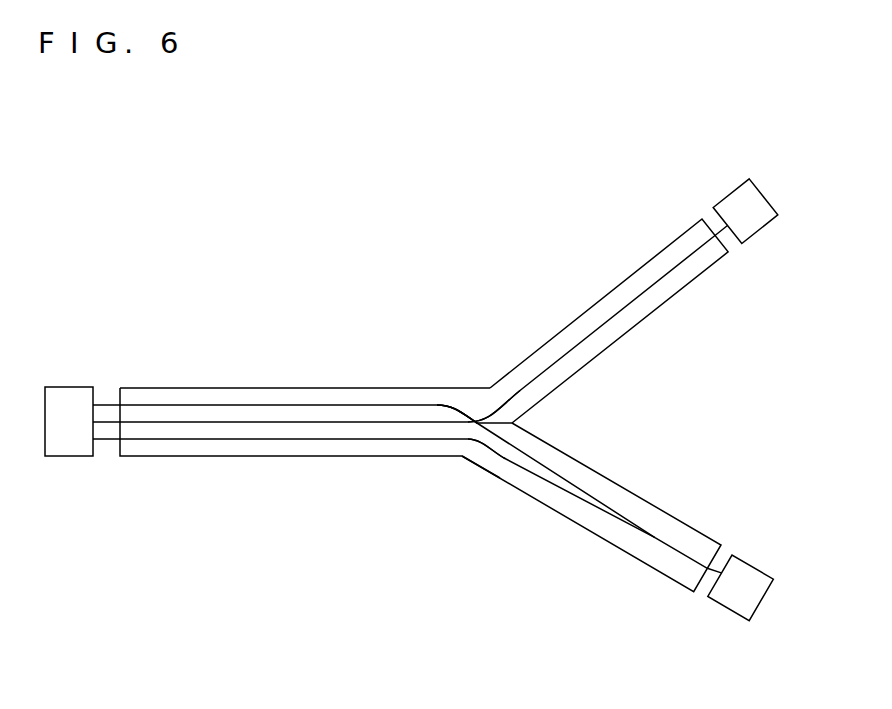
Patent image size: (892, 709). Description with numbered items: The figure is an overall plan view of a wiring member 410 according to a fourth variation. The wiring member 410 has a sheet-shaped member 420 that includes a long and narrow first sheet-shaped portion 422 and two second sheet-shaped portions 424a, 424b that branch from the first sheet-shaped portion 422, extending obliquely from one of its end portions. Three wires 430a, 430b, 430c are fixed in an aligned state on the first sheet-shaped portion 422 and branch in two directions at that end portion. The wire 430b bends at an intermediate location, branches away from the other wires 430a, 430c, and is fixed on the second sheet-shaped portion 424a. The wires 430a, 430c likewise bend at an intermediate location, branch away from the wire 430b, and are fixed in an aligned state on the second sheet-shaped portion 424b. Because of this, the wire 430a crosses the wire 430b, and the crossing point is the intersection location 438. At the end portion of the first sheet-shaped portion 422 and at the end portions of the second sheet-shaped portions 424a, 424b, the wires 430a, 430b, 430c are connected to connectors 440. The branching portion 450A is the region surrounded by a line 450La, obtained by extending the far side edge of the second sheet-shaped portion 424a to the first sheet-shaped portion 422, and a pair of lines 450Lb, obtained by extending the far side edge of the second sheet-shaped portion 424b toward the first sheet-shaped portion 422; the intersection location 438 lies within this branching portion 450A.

The wiring member 410 is at (502, 206).
The sheet-shaped member 420 is at (260, 378).
The first sheet-shaped portion 422 is at (337, 388).
The second sheet-shaped portion 424a is at (640, 264).
The second sheet-shaped portion 424b is at (620, 484).
The wire 430a is at (152, 405).
The wire 430b is at (171, 422).
The wire 430c is at (245, 439).
The intersection location 438 is at (477, 420).
The connector 440 is at (72, 387).
The branching portion 450A is at (462, 458).
The line 450La is at (450, 402).
The lines 450Lb is at (455, 455).